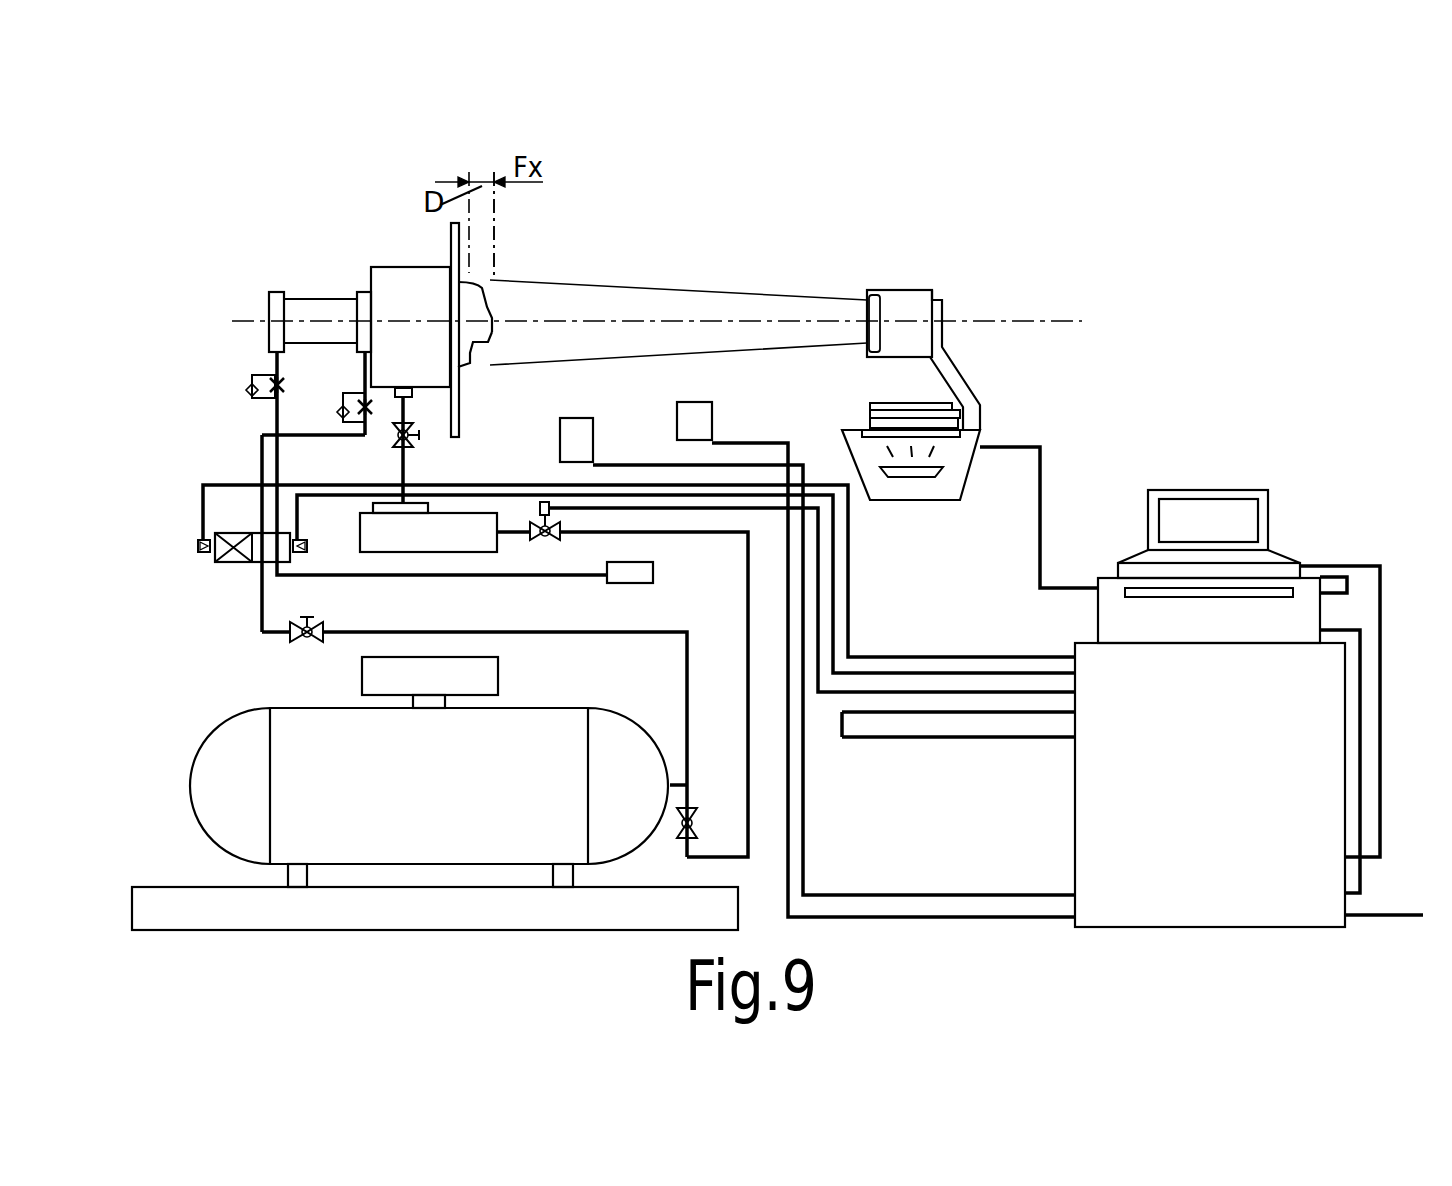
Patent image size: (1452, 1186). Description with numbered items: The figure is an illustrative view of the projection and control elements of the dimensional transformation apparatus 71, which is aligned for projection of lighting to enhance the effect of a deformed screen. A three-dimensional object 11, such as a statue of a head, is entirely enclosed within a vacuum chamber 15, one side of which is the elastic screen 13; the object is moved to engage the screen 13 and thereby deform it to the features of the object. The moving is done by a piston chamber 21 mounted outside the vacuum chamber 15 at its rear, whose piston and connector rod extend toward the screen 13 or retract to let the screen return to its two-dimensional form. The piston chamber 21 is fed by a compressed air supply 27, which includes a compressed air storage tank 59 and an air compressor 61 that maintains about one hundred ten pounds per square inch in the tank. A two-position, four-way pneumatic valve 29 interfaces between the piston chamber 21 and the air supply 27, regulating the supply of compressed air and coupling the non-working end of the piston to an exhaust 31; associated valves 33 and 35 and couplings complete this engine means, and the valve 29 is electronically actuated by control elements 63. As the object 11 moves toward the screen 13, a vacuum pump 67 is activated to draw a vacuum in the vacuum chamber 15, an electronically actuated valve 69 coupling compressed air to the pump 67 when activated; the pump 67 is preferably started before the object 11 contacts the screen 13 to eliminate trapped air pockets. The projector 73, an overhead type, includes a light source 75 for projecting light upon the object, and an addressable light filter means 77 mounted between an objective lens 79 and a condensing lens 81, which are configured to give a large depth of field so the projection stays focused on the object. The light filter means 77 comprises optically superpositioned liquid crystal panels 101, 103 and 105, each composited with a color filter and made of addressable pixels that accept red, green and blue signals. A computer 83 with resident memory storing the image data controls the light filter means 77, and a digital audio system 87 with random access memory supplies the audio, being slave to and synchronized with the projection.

The three-dimensional object 11 is at (473, 313).
The elastic screen 13 is at (492, 342).
The vacuum chamber 15 is at (387, 273).
The piston chamber 21 is at (277, 296).
The compressed air supply 27 is at (230, 703).
The two-position, four-way pneumatic valve 29 is at (237, 564).
The exhaust 31 is at (644, 578).
The valve 33 is at (263, 403).
The valve 35 is at (370, 425).
The compressed air storage tank 59 is at (447, 796).
The air compressor 61 is at (438, 690).
The control elements 63 is at (1222, 794).
The vacuum pump 67 is at (442, 547).
The electronically actuated valve 69 is at (549, 543).
The dimensional transformation apparatus 71 is at (500, 250).
The projector 73 is at (972, 393).
The light source 75 is at (923, 477).
The addressable light filter means 77 is at (860, 397).
The objective lens 79 is at (943, 437).
The condensing lens 81 is at (877, 307).
The computer 83 is at (1112, 633).
The digital audio system 87 is at (587, 420).
The liquid crystal panel 101 is at (918, 405).
The liquid crystal panel 103 is at (870, 412).
The liquid crystal panel 105 is at (873, 418).